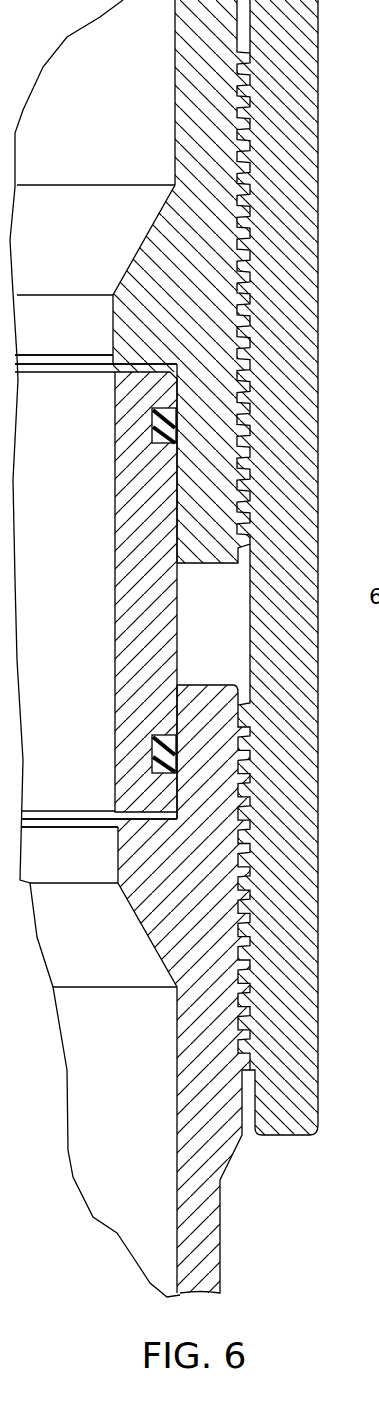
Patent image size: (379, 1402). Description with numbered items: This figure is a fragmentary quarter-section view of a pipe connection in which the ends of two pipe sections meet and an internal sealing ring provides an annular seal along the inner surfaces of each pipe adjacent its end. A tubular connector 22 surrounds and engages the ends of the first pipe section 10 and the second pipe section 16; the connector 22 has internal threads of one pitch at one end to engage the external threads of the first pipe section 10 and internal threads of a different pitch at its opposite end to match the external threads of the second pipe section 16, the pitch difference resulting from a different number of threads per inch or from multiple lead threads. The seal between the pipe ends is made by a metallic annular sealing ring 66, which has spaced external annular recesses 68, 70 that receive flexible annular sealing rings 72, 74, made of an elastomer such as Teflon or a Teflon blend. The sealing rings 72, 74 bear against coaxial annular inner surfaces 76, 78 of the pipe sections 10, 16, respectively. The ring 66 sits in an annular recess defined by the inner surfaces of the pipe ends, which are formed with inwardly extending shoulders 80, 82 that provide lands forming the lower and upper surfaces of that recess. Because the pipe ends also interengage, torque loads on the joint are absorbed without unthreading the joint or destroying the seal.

The first pipe section 10 is at (193, 1200).
The second pipe section 16 is at (183, 50).
The tubular connector 22 is at (320, 190).
The metallic annular sealing ring 66 is at (143, 573).
The external annular recess 68 is at (152, 433).
The external annular recess 70 is at (152, 745).
The flexible annular sealing ring 72 is at (152, 417).
The flexible annular sealing ring 74 is at (152, 760).
The coaxial annular inner surface 76 is at (177, 707).
The coaxial annular inner surface 78 is at (177, 503).
The inwardly extending shoulder 80 is at (118, 847).
The inwardly extending shoulder 82 is at (124, 348).